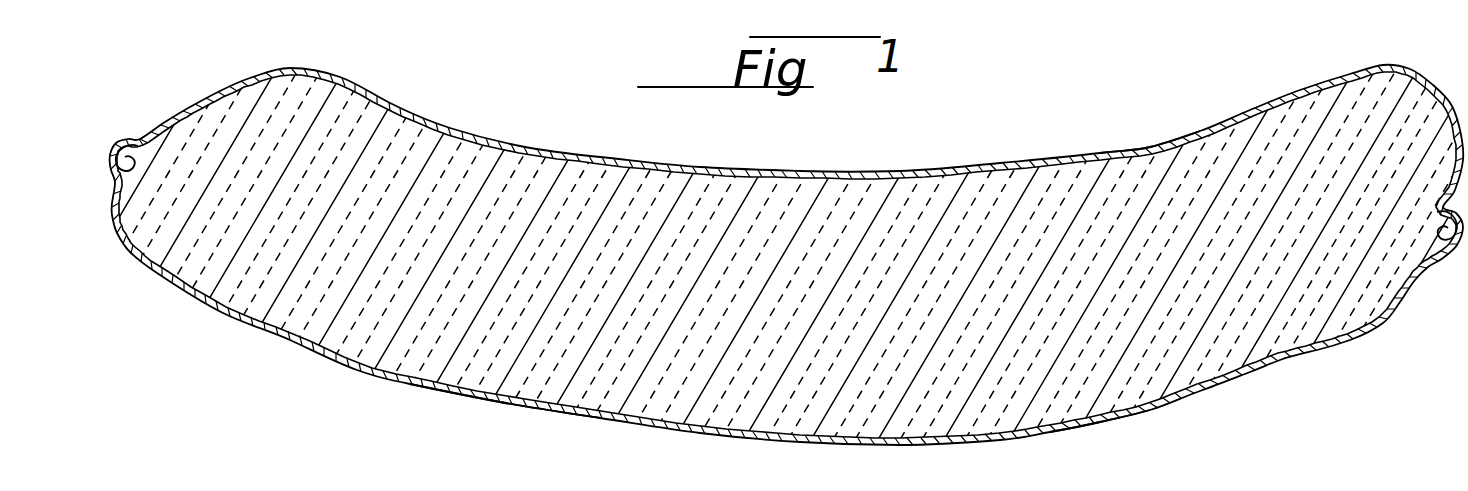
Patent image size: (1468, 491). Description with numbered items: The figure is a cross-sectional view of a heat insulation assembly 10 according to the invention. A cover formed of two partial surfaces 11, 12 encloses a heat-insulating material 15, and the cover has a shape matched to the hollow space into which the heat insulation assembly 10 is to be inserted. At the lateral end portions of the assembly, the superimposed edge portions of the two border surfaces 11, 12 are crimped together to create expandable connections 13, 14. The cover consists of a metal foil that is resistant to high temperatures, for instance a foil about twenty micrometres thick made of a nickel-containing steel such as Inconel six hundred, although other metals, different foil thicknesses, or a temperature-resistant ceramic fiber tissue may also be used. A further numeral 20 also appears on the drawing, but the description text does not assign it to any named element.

The heat insulation assembly 10 is at (933, 133).
The partial surface 11 is at (1123, 420).
The partial surface 12 is at (1138, 142).
The expandable connection 13 is at (1443, 265).
The expandable connection 14 is at (130, 142).
The heat-insulating material 15 is at (438, 390).
The blade core 20 is at (550, 446).